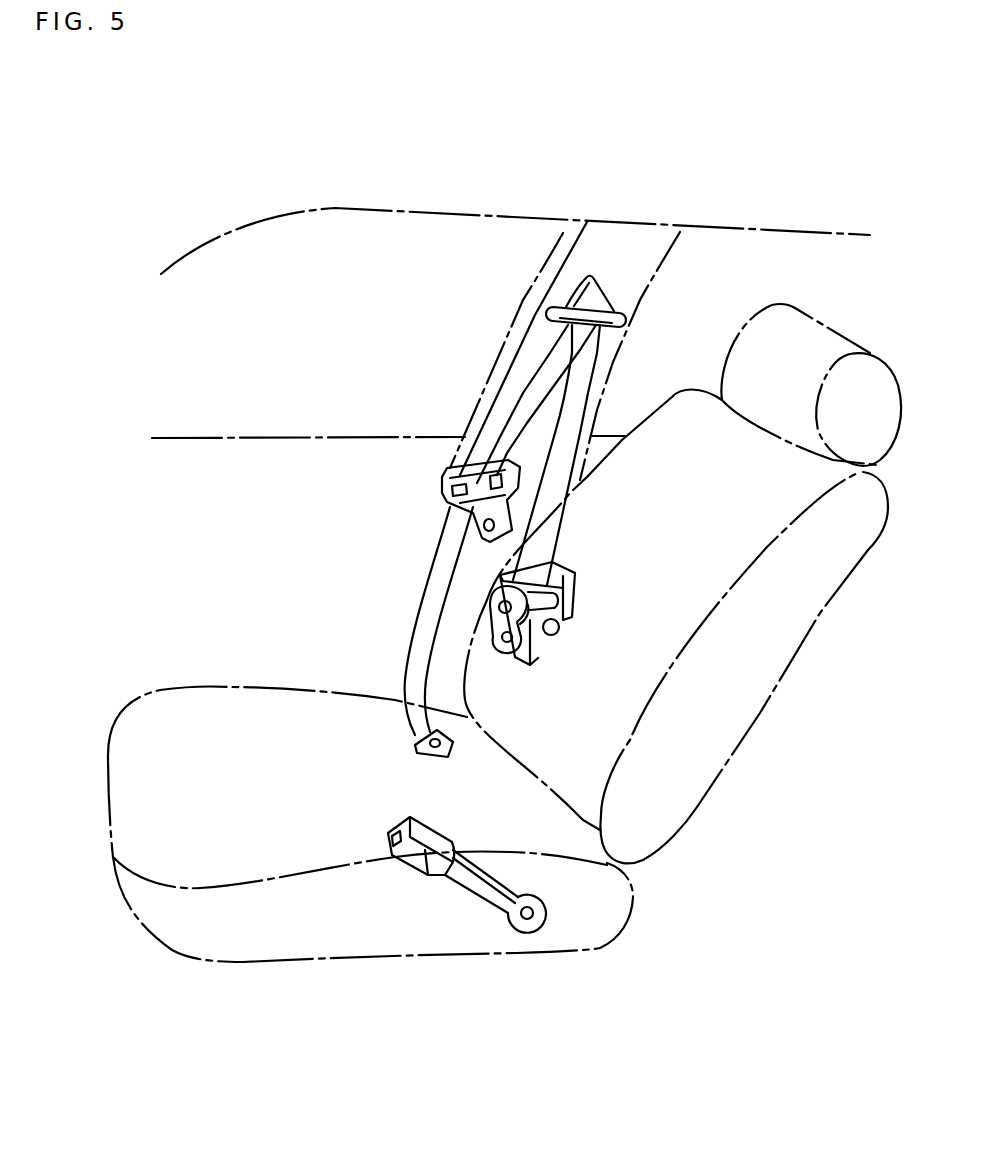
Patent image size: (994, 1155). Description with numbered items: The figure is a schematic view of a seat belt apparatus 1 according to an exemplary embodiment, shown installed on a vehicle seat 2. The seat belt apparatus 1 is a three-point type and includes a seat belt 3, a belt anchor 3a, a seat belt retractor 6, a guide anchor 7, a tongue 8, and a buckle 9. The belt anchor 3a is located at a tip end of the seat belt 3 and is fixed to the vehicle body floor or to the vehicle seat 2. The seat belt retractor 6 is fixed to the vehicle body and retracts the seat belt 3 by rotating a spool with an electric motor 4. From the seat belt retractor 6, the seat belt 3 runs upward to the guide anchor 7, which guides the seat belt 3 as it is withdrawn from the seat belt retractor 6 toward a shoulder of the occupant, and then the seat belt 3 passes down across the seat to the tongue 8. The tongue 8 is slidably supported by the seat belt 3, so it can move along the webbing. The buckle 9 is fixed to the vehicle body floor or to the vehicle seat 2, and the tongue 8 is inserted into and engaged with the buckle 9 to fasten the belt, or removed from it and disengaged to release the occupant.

The seat belt apparatus 1 is at (602, 705).
The vehicle seat 2 is at (255, 940).
The seat belt 3 is at (533, 392).
The belt anchor 3a is at (441, 760).
The electric motor 4 is at (547, 632).
The seat belt retractor 6 is at (573, 607).
The guide anchor 7 is at (597, 297).
The tongue 8 is at (450, 505).
The buckle 9 is at (400, 858).